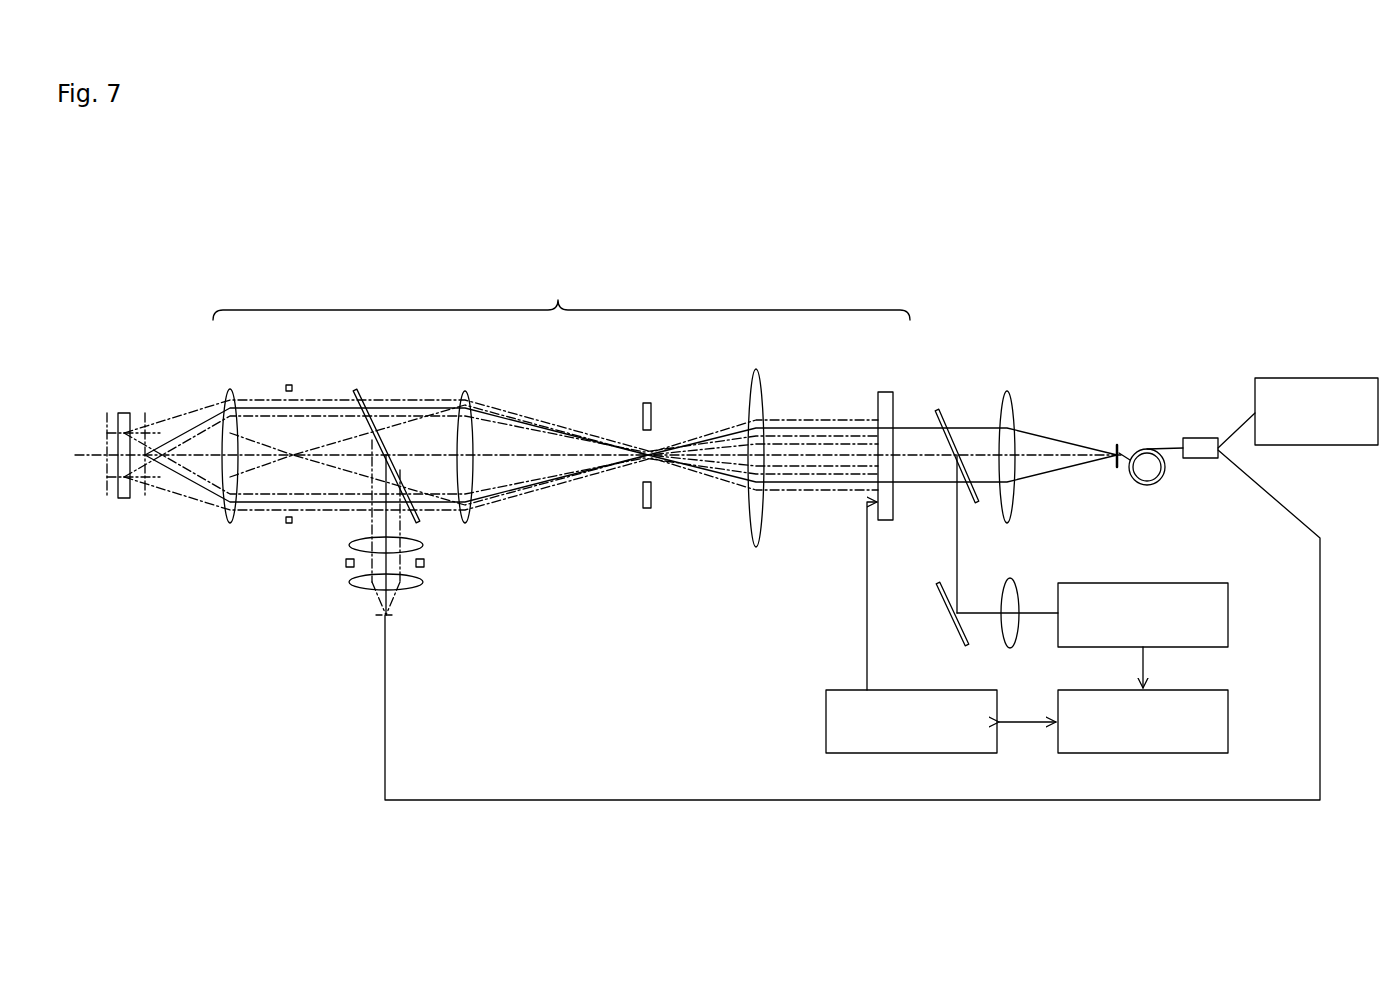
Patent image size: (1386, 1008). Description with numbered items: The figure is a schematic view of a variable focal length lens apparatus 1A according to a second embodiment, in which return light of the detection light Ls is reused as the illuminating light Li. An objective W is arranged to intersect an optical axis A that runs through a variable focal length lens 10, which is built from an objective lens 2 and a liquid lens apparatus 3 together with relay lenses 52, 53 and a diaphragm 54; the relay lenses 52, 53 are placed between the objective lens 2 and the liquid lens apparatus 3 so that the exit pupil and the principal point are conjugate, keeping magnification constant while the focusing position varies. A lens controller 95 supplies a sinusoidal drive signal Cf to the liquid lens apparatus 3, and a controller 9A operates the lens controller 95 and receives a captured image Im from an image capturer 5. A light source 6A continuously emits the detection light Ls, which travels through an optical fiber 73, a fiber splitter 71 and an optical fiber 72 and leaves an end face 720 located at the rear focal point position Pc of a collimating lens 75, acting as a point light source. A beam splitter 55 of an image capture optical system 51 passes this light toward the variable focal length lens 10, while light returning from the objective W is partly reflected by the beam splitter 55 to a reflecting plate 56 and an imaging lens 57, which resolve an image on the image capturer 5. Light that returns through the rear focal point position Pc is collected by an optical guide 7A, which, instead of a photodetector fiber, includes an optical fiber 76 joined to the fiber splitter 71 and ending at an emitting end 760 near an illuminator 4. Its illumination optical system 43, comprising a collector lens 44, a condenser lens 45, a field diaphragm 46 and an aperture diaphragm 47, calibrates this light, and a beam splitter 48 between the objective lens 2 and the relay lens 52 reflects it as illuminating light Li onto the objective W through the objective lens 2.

The variable focal length lens apparatus 1A is at (1120, 243).
The objective lens 2 is at (232, 400).
The liquid lens apparatus 3 is at (895, 400).
The illuminator 4 is at (282, 655).
The image capturer 5 is at (1224, 583).
The light source 6A is at (1352, 378).
The optical guide 7A is at (1178, 335).
The controller 9A is at (1224, 690).
The variable focal length lens 10 is at (561, 298).
The illumination optical system 43 is at (305, 575).
The collector lens 44 is at (423, 585).
The condenser lens 45 is at (423, 545).
The field diaphragm 46 is at (426, 563).
The aperture diaphragm 47 is at (291, 383).
The beam splitter 48 is at (365, 398).
The image capture optical system 51 is at (1018, 553).
The relay lens 52 is at (470, 394).
The relay lens 53 is at (762, 395).
The diaphragm 54 is at (647, 401).
The beam splitter 55 is at (948, 409).
The reflecting plate 56 is at (955, 632).
The imaging lens 57 is at (1005, 635).
The fiber splitter 71 is at (1199, 438).
The optical fiber 72 is at (1160, 449).
The optical fiber 73 is at (1236, 432).
The collimating lens 75 is at (1013, 400).
The optical fiber 76 is at (735, 800).
The end face 720 is at (1125, 452).
The emitting end 760 is at (392, 617).
The lens controller 95 is at (845, 690).
The objective W is at (124, 413).
The detection light Ls is at (183, 430).
The illuminating light Li is at (320, 470).
The optical axis A is at (547, 455).
The rear focal point position Pc is at (1113, 447).
The drive signal Cf is at (857, 596).
The captured image Im is at (1159, 667).